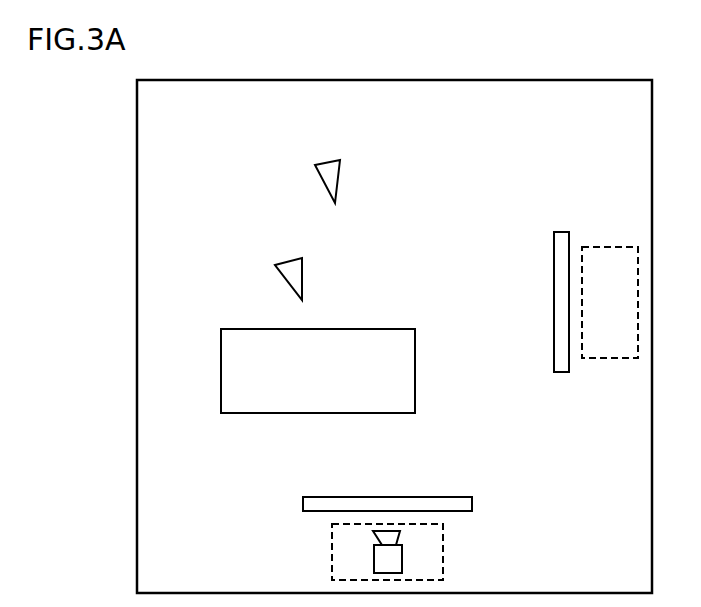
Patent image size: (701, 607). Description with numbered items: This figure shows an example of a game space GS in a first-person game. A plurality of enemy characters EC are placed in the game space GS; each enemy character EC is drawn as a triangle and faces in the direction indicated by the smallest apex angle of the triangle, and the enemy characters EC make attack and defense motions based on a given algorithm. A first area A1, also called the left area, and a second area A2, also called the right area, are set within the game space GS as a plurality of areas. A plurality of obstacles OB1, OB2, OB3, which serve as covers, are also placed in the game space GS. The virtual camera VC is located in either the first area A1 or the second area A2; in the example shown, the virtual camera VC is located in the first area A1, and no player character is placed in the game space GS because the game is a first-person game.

The game space GS is at (584, 64).
The enemy character EC is at (331, 161).
The obstacle OB3 is at (379, 329).
The obstacle OB2 is at (561, 232).
The second area A2 is at (614, 247).
The obstacle OB1 is at (449, 497).
The first area A1 is at (443, 548).
The virtual camera VC is at (374, 557).